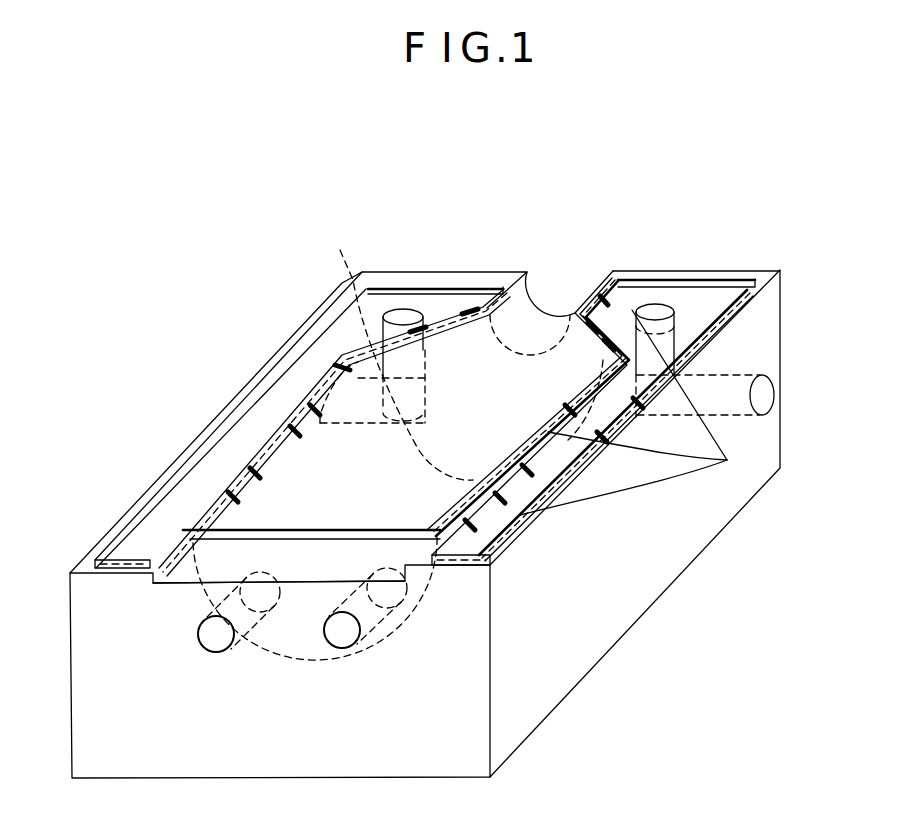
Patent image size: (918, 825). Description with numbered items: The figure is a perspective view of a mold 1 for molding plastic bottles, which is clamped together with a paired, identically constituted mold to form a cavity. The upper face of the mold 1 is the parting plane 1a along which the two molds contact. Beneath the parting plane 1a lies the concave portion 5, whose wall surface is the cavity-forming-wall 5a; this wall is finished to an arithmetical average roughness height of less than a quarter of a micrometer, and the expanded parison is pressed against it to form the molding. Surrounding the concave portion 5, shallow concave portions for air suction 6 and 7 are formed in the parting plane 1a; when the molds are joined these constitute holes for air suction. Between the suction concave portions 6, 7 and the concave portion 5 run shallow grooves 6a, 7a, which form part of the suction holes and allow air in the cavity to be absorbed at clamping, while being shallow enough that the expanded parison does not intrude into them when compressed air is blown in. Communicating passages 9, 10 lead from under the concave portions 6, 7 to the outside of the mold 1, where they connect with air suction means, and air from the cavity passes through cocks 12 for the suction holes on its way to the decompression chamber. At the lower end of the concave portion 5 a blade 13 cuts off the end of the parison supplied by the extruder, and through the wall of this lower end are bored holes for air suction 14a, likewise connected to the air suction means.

The mold 1 is at (733, 247).
The parting plane 1a is at (403, 273).
The concave portion 5 is at (477, 455).
The cavity-forming-wall 5a is at (262, 513).
The shallow concave portion for air suction 6 is at (713, 305).
The shallow groove 6a is at (727, 460).
The shallow concave portion for air suction 7 is at (263, 415).
The shallow groove 7a is at (468, 310).
The communicating passage 9 is at (340, 250).
The communicating passage 10 is at (688, 332).
The cock 12 is at (410, 310).
The blade 13 is at (323, 540).
The hole for air suction 14a is at (217, 648).